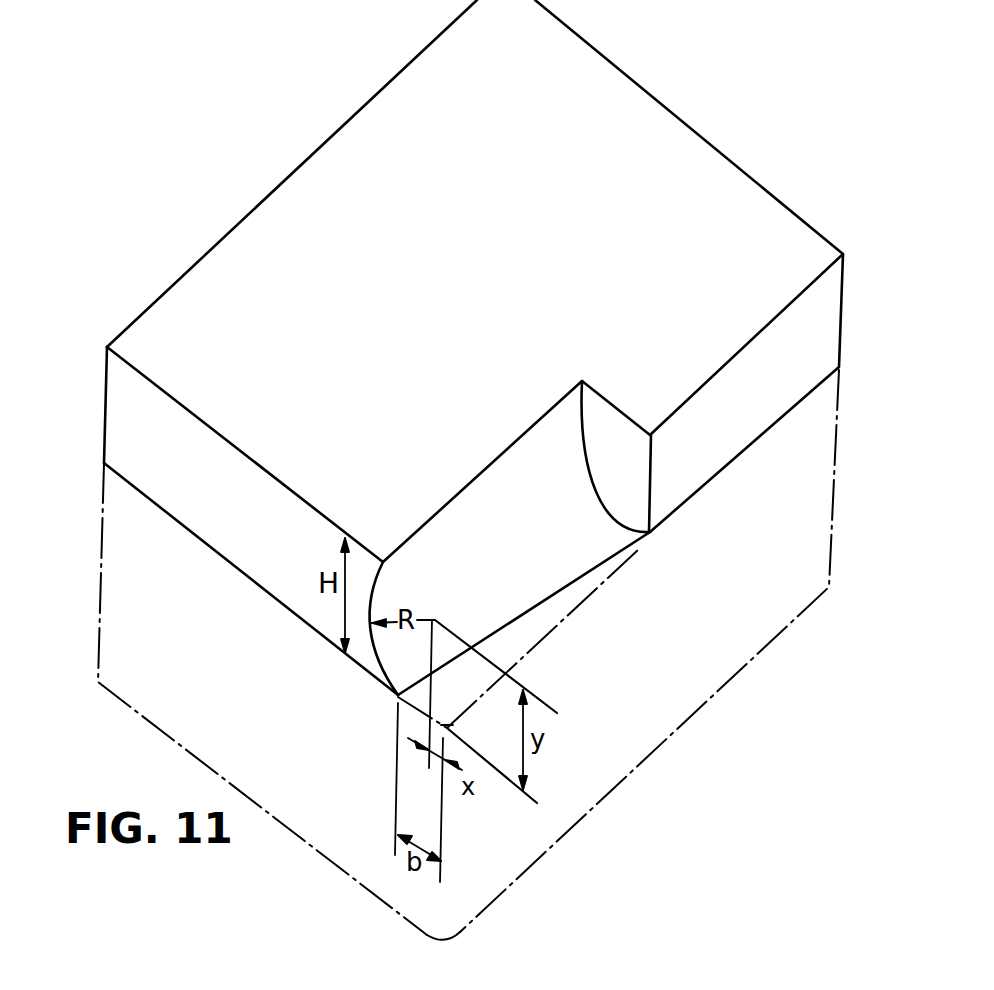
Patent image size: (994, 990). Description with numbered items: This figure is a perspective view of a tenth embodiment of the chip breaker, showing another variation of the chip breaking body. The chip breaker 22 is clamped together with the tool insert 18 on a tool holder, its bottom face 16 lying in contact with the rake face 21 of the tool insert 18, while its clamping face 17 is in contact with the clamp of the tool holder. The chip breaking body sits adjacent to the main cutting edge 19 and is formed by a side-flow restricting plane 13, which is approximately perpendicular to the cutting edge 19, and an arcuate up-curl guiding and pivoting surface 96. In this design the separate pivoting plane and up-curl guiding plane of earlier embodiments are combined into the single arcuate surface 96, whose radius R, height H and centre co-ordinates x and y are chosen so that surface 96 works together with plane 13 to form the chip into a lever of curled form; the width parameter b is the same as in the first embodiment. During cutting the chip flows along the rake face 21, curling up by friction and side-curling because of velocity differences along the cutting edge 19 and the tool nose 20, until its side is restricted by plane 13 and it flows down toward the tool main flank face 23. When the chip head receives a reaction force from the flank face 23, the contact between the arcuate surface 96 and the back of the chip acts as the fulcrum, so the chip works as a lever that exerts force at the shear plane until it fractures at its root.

The side-flow restricting plane 13 is at (620, 460).
The bottom face 16 is at (226, 561).
The clamping face 17 is at (370, 130).
The tool insert 18 is at (123, 532).
The main cutting edge 19 is at (555, 633).
The tool nose 20 is at (447, 728).
The rake face 21 is at (595, 570).
The chip breaker 22 is at (143, 418).
The tool main flank face 23 is at (705, 595).
The arcuate up-curl guiding and pivoting surface 96 is at (547, 498).